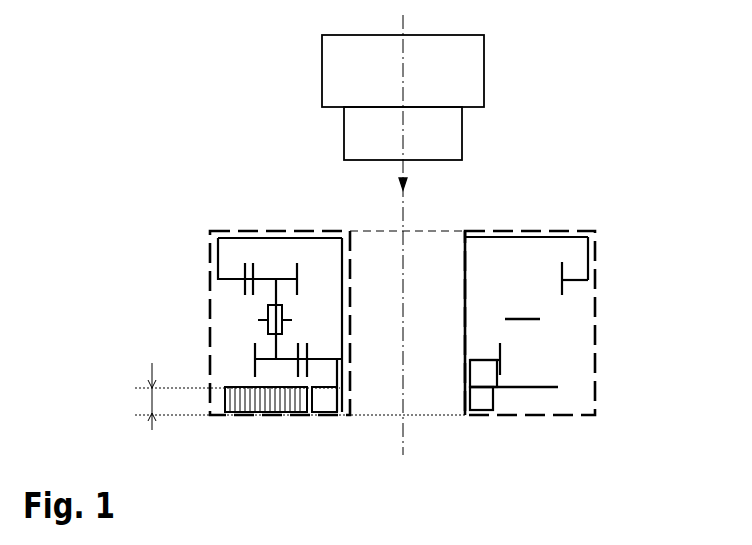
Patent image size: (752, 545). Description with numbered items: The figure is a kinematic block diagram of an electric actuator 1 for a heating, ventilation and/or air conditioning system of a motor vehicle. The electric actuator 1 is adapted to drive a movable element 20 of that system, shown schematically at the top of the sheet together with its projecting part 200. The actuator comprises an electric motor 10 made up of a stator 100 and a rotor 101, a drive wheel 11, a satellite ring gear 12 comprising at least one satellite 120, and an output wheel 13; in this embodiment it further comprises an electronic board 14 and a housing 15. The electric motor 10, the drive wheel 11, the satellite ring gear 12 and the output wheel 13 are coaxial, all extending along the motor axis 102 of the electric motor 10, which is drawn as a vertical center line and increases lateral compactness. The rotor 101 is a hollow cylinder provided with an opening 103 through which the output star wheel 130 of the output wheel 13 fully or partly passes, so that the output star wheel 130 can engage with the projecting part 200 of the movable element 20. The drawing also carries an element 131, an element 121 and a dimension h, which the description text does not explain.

The electric actuator 1 is at (240, 110).
The movable element 20 is at (490, 60).
The projecting part 200 is at (447, 135).
The motor axis 102 is at (402, 355).
The top beam of left frame 131 is at (243, 237).
The opening 103 is at (345, 364).
The satellite ring gear 12 is at (124, 245).
The satellite 120 is at (245, 278).
The clutch 121 is at (258, 321).
The electric motor 10 is at (328, 490).
The stator 100 is at (253, 397).
The rotor 101 is at (321, 397).
The output star wheel 130 is at (468, 265).
The output wheel 13 is at (576, 275).
The drive wheel 11 is at (484, 355).
The electronic board 14 is at (535, 386).
The housing 15 is at (595, 415).
The height h is at (141, 396).